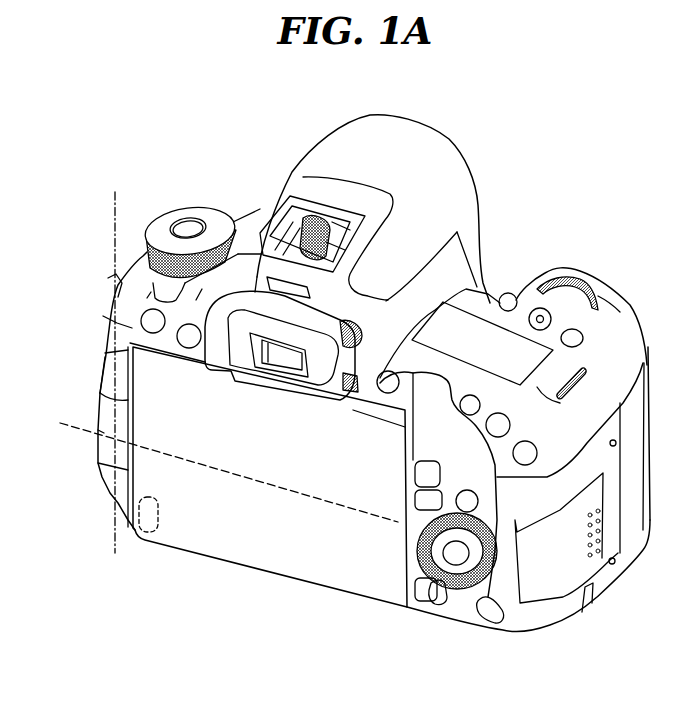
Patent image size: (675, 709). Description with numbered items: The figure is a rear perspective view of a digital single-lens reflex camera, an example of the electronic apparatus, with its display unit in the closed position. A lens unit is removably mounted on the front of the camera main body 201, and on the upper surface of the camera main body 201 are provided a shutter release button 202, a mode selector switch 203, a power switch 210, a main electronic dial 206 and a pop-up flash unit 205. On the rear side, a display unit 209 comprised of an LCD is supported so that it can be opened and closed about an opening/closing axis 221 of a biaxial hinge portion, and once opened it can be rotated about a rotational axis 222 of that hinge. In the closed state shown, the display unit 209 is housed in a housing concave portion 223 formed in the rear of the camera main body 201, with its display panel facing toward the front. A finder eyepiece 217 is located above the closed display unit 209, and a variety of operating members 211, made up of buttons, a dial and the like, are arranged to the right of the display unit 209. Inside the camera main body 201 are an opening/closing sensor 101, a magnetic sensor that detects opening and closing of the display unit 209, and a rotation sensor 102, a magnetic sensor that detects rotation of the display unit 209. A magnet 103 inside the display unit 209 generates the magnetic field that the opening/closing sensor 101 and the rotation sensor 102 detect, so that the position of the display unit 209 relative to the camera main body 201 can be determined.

The camera main body 201 is at (262, 138).
The pop-up flash unit 205 is at (408, 142).
The mode selector switch 203 is at (174, 218).
The power switch 210 is at (163, 288).
The opening/closing axis 221 is at (112, 204).
The opening/closing sensor 101 is at (107, 323).
The rotation sensor 102 is at (115, 337).
The rotational axis 222 is at (62, 418).
The magnet 103 is at (143, 540).
The finder eyepiece 217 is at (262, 372).
The main electronic dial 206 is at (566, 278).
The shutter release button 202 is at (593, 279).
The display unit 209 is at (353, 583).
The housing concave portion 223 is at (277, 550).
The operating members 211 is at (442, 605).